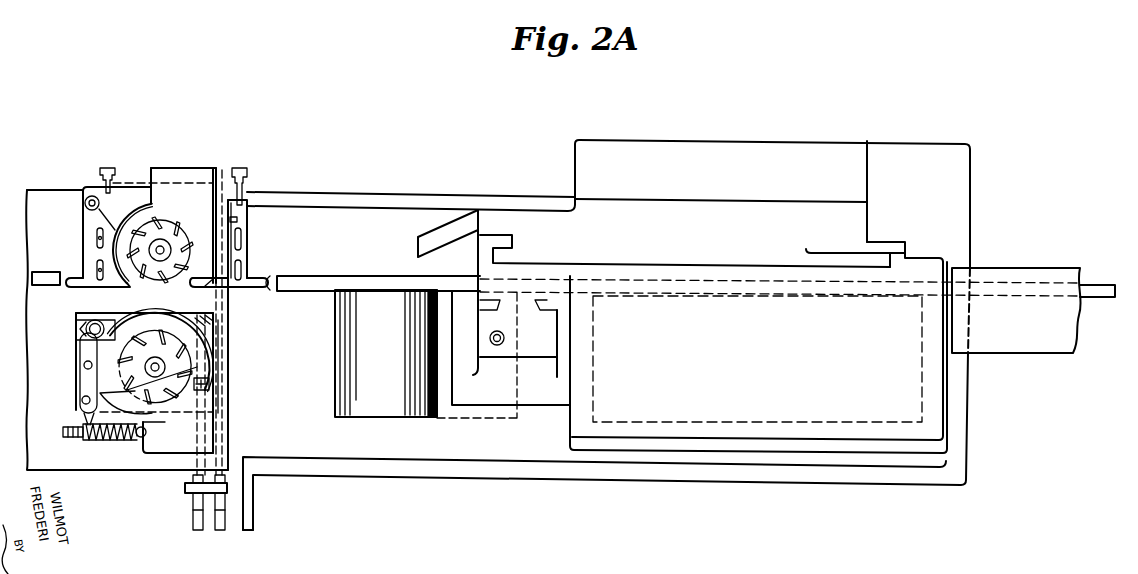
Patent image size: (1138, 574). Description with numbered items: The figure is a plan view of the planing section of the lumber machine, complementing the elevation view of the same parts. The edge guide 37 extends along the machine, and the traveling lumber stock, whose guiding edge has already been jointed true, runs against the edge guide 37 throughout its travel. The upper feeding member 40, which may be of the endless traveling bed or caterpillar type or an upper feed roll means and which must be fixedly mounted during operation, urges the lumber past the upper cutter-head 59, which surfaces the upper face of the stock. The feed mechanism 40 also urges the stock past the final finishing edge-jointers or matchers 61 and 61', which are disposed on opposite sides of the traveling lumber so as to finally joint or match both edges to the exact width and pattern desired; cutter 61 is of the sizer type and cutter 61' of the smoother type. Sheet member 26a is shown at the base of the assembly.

The final finishing cutter head (smoother type) 61' is at (169, 238).
The final finishing cutter head (sizer type) 61 is at (155, 348).
The upper cutter-head 59 is at (372, 405).
The edge guide 37 is at (869, 294).
The upper feeding member 40 is at (903, 397).
The base sheet 26a is at (952, 474).